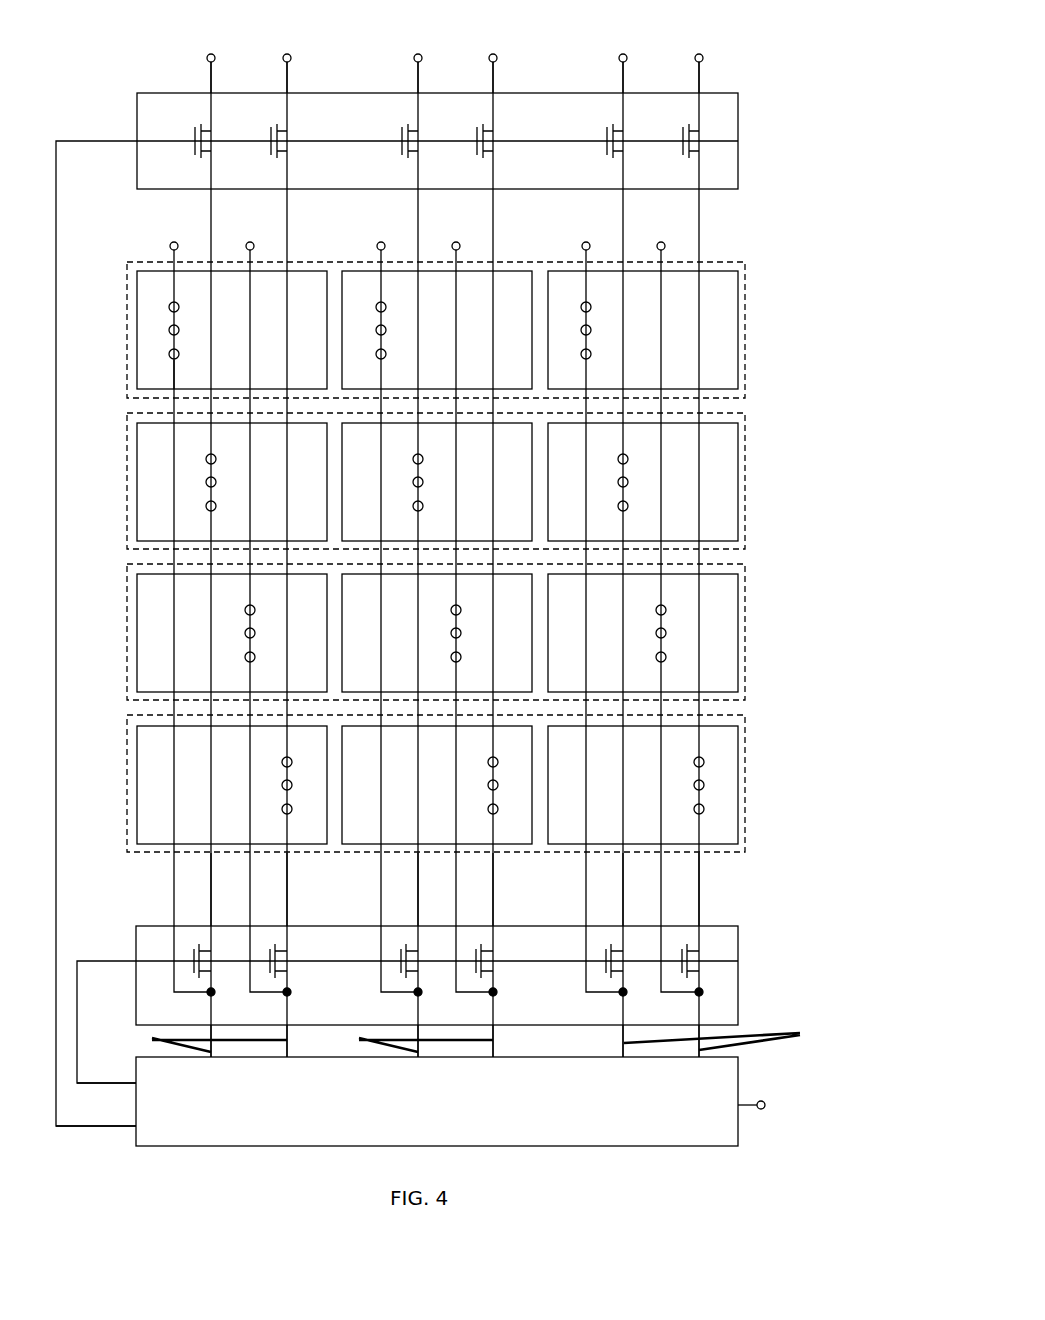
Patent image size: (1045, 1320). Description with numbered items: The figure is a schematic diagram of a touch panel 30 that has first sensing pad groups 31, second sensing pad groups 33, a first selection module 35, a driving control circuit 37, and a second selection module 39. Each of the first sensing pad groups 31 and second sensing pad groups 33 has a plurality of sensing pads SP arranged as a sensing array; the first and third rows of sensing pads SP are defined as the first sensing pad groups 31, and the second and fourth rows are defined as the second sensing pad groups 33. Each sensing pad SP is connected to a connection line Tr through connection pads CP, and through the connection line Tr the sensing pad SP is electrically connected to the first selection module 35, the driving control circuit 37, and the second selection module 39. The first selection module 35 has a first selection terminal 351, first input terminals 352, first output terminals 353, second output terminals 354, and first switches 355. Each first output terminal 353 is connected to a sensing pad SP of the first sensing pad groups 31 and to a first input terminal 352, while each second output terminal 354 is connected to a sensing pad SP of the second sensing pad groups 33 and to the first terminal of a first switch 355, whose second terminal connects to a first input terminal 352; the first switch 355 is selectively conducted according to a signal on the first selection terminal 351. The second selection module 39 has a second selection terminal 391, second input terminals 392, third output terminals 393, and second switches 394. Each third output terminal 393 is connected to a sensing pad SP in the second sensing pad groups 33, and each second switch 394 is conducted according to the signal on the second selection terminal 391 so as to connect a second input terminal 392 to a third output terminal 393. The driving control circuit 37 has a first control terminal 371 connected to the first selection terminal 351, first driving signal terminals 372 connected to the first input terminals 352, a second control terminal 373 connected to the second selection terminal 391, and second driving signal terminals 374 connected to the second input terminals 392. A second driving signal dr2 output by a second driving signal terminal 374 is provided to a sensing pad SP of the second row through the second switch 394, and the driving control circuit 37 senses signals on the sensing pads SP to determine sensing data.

The touch panel 30 is at (836, 40).
The second selection module 39 is at (741, 141).
The second selection terminal 391 is at (97, 139).
The second input terminal 392 is at (287, 78).
The third output terminal 393 is at (699, 223).
The second switch 394 is at (213, 137).
The first sensing pad group 31 is at (745, 323).
The second sensing pad group 33 is at (745, 475).
The first selection module 35 is at (741, 975).
The first selection terminal 351 is at (107, 959).
The first input terminal 352 is at (482, 1037).
The first output terminal 353 is at (249, 896).
The second output terminal 354 is at (211, 866).
The first switch 355 is at (216, 968).
The driving control circuit 37 is at (593, 1147).
The first control terminal 371 is at (136, 1083).
The first driving signal terminal 372 is at (211, 1058).
The second control terminal 373 is at (136, 1126).
The second driving signal terminal 374 is at (738, 1105).
The sensing pad SP is at (134, 290).
The connection pad CP is at (166, 308).
The connection line Tr is at (172, 374).
The second driving signal dr2 is at (459, 46).